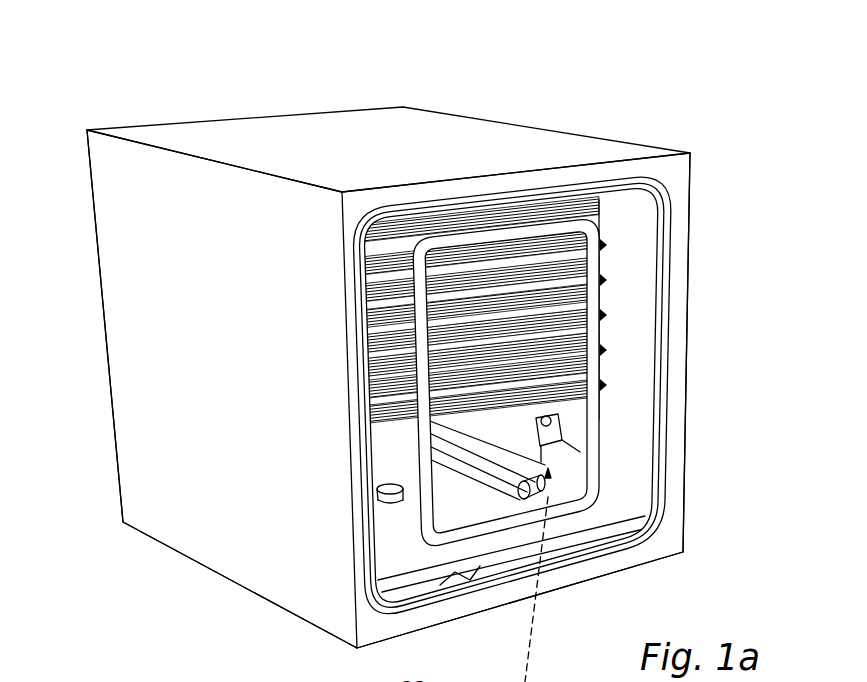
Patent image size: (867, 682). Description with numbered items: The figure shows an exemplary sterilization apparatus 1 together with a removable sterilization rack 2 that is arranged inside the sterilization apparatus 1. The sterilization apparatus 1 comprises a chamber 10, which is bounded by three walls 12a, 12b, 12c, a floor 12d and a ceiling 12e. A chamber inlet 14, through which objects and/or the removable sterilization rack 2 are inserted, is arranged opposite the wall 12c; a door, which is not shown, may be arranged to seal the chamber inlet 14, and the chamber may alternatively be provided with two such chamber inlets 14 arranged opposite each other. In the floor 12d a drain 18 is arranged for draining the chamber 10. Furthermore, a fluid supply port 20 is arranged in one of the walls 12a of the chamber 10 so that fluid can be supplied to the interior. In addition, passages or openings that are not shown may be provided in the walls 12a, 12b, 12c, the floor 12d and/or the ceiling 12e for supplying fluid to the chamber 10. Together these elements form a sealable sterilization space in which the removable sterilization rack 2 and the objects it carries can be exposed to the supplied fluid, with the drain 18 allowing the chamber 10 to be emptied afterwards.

The sterilization apparatus 1 is at (600, 83).
The removable sterilization rack 2 is at (615, 504).
The chamber 10 is at (632, 308).
The wall 12a is at (638, 242).
The wall 12b is at (130, 215).
The wall 12c is at (195, 118).
The floor 12d is at (490, 553).
The ceiling 12e is at (345, 152).
The chamber inlet 14 is at (630, 378).
The drain 18 is at (380, 473).
The fluid supply port 20 is at (563, 427).